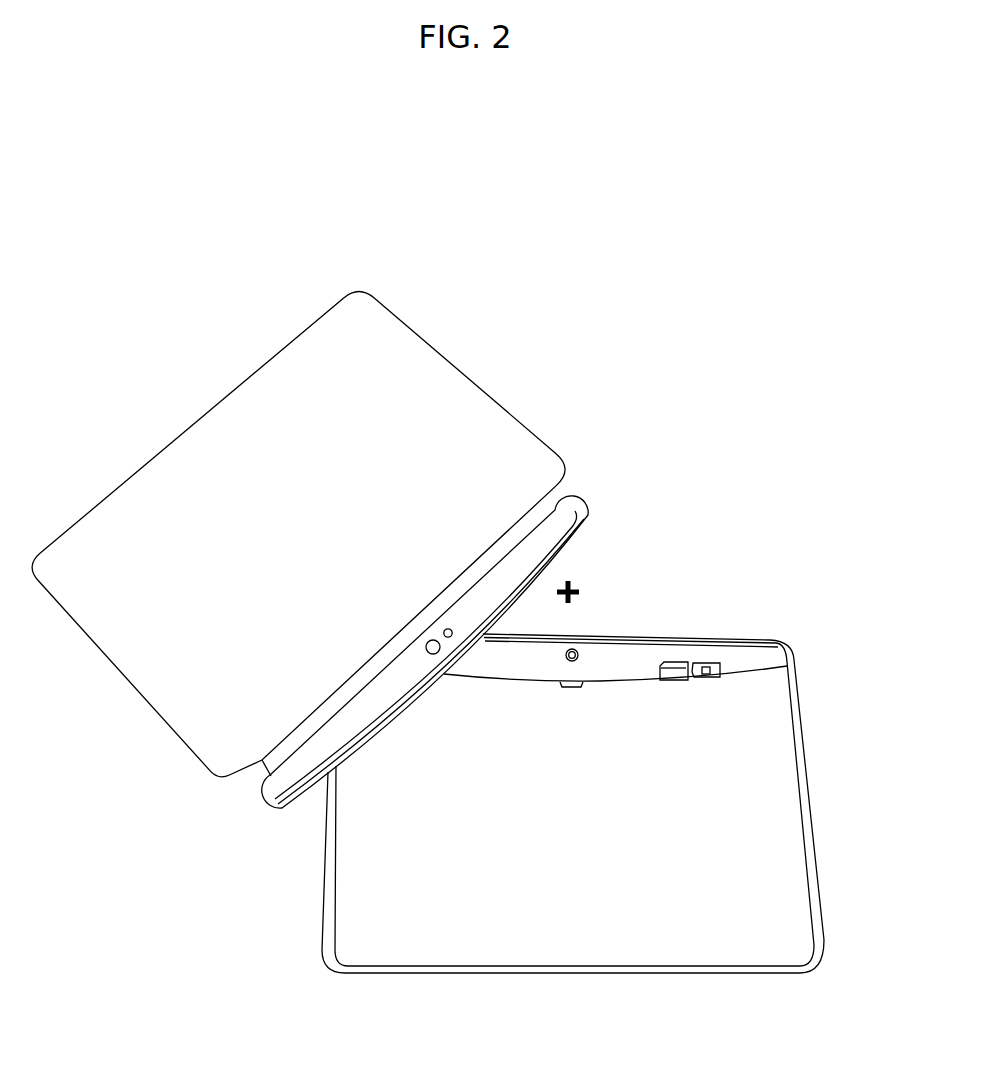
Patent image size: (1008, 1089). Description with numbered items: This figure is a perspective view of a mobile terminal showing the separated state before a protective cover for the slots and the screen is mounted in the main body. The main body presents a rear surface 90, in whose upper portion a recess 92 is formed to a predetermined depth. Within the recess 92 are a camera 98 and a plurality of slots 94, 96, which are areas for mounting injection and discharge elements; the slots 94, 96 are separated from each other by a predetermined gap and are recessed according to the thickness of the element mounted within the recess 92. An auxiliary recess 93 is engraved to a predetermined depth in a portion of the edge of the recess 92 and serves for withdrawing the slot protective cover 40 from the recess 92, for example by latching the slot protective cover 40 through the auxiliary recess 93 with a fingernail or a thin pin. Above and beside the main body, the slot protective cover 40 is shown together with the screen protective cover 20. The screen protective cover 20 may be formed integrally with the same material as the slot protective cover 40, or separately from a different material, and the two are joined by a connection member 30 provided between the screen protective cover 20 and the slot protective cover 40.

The screen protective cover 20 is at (438, 398).
The connection member 30 is at (553, 508).
The slot protective cover 40 is at (560, 521).
The rear surface 90 is at (778, 808).
The recess 92 is at (762, 662).
The auxiliary recess 93 is at (573, 687).
The slot 94 is at (707, 663).
The slot 96 is at (673, 662).
The camera 98 is at (572, 648).